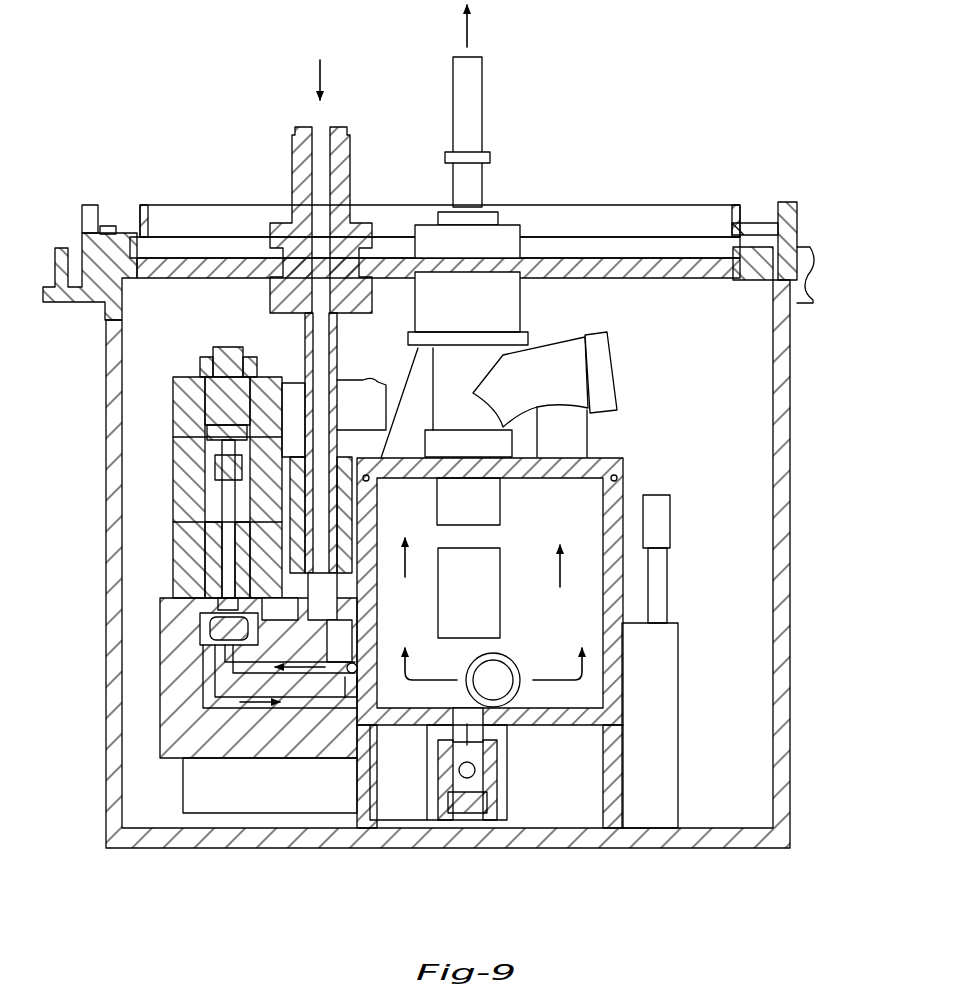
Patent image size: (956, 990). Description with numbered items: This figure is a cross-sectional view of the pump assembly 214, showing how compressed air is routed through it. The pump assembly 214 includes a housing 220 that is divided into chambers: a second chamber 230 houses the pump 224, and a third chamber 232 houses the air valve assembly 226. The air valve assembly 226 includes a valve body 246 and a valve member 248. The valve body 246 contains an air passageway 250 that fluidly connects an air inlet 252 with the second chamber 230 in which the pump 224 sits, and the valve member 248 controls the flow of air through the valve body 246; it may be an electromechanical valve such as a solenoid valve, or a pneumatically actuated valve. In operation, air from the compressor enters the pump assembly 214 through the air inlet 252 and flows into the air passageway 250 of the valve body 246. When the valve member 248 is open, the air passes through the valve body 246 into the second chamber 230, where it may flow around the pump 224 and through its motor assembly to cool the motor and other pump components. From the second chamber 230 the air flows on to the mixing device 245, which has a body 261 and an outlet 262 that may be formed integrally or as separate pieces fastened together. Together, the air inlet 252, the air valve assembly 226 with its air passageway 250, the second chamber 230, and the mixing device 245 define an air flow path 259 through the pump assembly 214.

The pump assembly 214 is at (140, 165).
The housing 220 is at (790, 500).
The air inlet 252 is at (318, 135).
The outlet 262 is at (455, 80).
The mixing device 245 is at (512, 98).
The body 261 is at (557, 360).
The second chamber 230 is at (583, 492).
The pump 224 is at (485, 603).
The third chamber 232 is at (143, 407).
The air valve assembly 226 is at (203, 578).
The valve member 248 is at (215, 545).
The valve body 246 is at (170, 645).
The air passageway 250 is at (208, 683).
The air flow path 259 is at (322, 728).